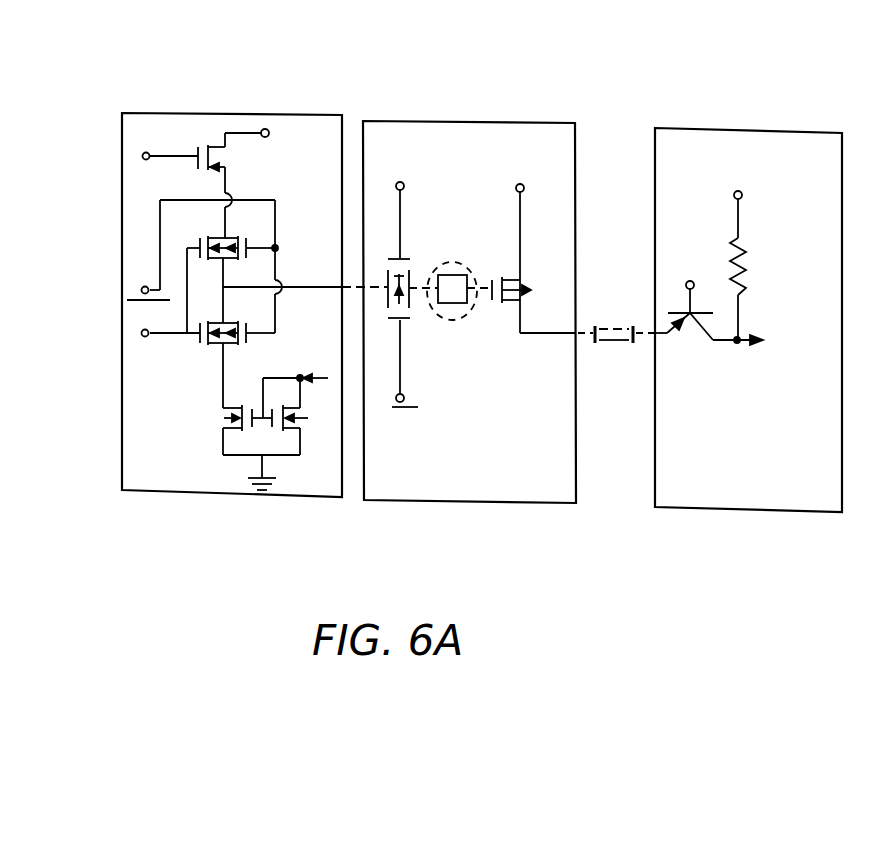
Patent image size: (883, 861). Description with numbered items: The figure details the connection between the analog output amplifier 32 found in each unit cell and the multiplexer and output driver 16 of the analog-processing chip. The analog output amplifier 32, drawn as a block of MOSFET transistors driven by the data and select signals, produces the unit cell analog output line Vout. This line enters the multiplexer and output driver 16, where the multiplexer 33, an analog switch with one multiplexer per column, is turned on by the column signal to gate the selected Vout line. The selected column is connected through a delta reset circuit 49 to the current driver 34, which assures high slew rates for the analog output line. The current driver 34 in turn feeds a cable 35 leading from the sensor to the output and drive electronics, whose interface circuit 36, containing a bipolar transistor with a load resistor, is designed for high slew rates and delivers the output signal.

The analog output amplifier 32 is at (306, 118).
The multiplexer and output driver 16 is at (472, 120).
The delta reset circuit 49 is at (457, 264).
The cable 35 is at (612, 323).
The multiplexer 33 is at (418, 340).
The current driver 34 is at (507, 320).
The interface circuit 36 is at (752, 515).